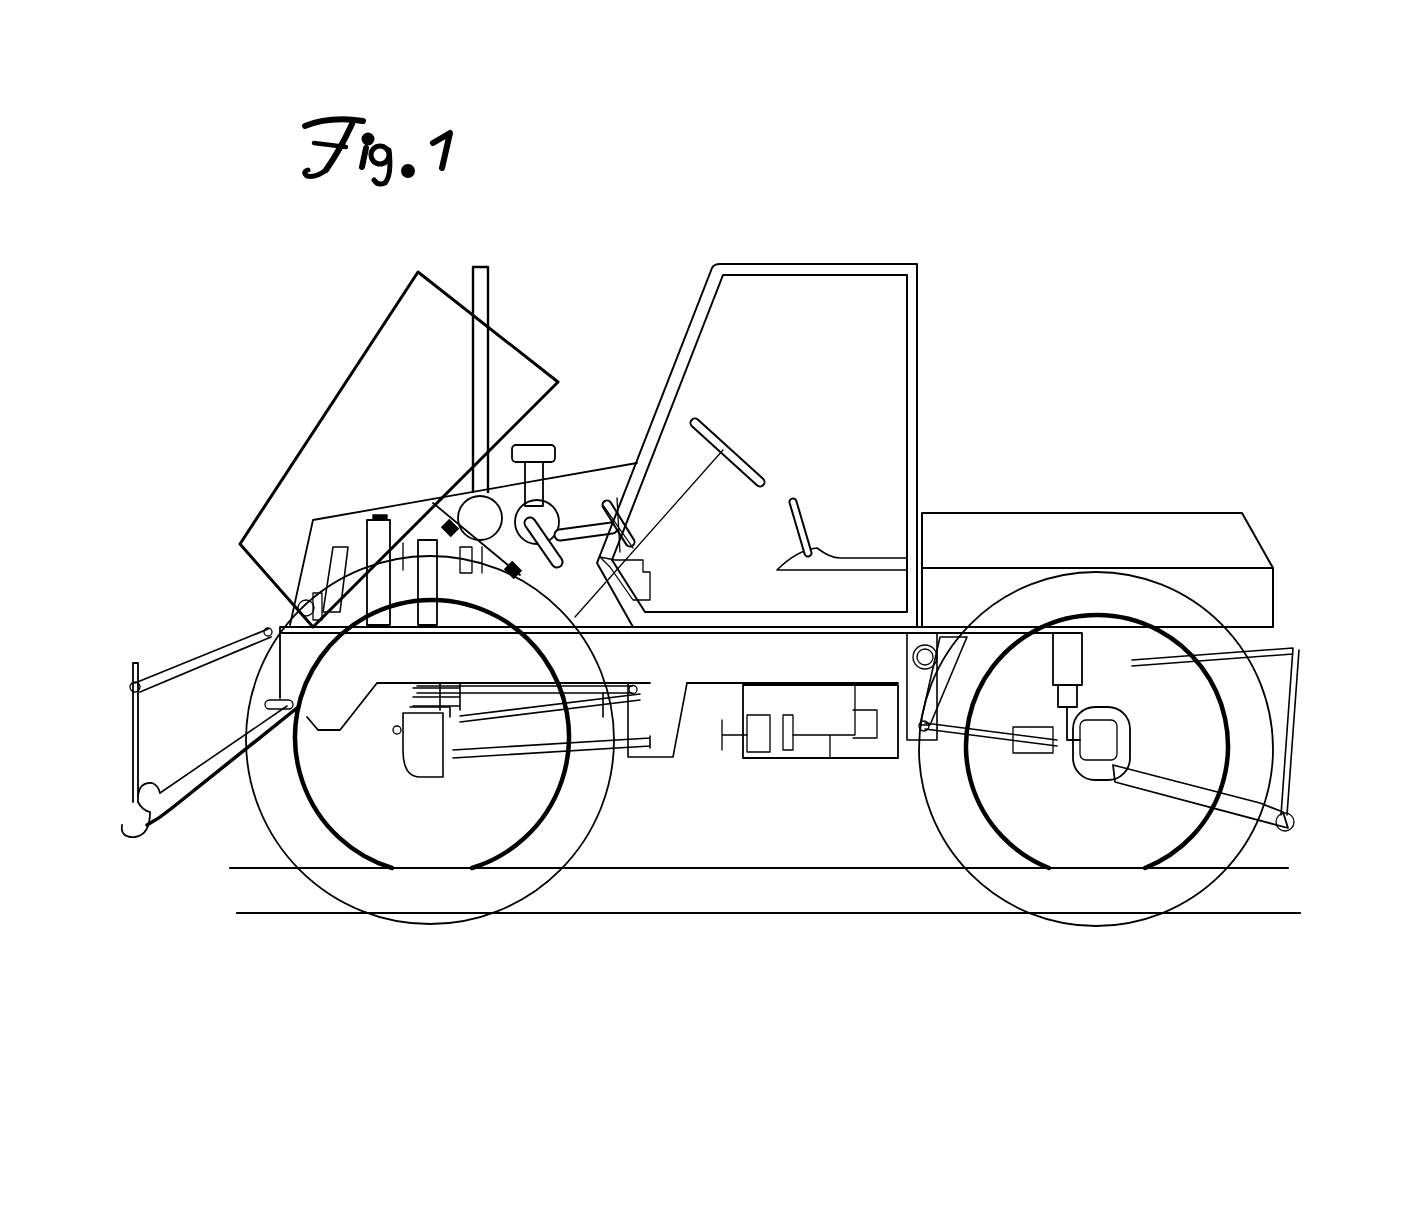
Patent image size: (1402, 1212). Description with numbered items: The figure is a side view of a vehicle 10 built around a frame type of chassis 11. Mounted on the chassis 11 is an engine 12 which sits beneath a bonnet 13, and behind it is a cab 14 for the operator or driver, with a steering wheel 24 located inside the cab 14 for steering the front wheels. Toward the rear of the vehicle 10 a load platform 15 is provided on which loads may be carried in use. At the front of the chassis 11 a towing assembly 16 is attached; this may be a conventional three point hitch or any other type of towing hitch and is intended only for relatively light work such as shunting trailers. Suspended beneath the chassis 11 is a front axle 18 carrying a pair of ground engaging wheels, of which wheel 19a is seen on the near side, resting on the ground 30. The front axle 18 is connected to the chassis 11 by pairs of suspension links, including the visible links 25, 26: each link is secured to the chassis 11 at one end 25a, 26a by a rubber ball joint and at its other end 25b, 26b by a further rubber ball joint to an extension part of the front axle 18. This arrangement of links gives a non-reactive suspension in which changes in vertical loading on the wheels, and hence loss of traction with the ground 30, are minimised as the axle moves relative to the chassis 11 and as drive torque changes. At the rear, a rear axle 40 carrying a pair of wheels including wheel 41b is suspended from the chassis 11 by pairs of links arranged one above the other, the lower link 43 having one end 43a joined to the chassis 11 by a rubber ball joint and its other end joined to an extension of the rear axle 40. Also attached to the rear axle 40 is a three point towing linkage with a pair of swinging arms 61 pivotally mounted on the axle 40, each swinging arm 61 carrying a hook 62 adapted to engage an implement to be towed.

The vehicle 10 is at (931, 255).
The chassis 11 is at (700, 725).
The engine 12 is at (433, 503).
The bonnet 13 is at (527, 392).
The cab 14 is at (762, 258).
The load platform 15 is at (1190, 512).
The towing assembly 16 is at (163, 666).
The front axle 18 is at (403, 753).
The ground engaging wheel 19a is at (510, 887).
The steering wheel 24 is at (720, 440).
The suspension link 25 is at (600, 668).
The one end of suspension link 25a is at (672, 705).
The other end of suspension link 25b is at (482, 666).
The suspension link 26 is at (497, 753).
The one end of suspension link 26a is at (661, 758).
The other end of suspension link 26b is at (463, 760).
The ground 30 is at (250, 913).
The rear axle 40 is at (1007, 897).
The ground engaging wheel 41b is at (970, 842).
The suspension link 43 is at (990, 745).
The one end of suspension link 43a is at (918, 760).
The swinging arm 61 is at (1205, 913).
The hook 62 is at (1300, 815).